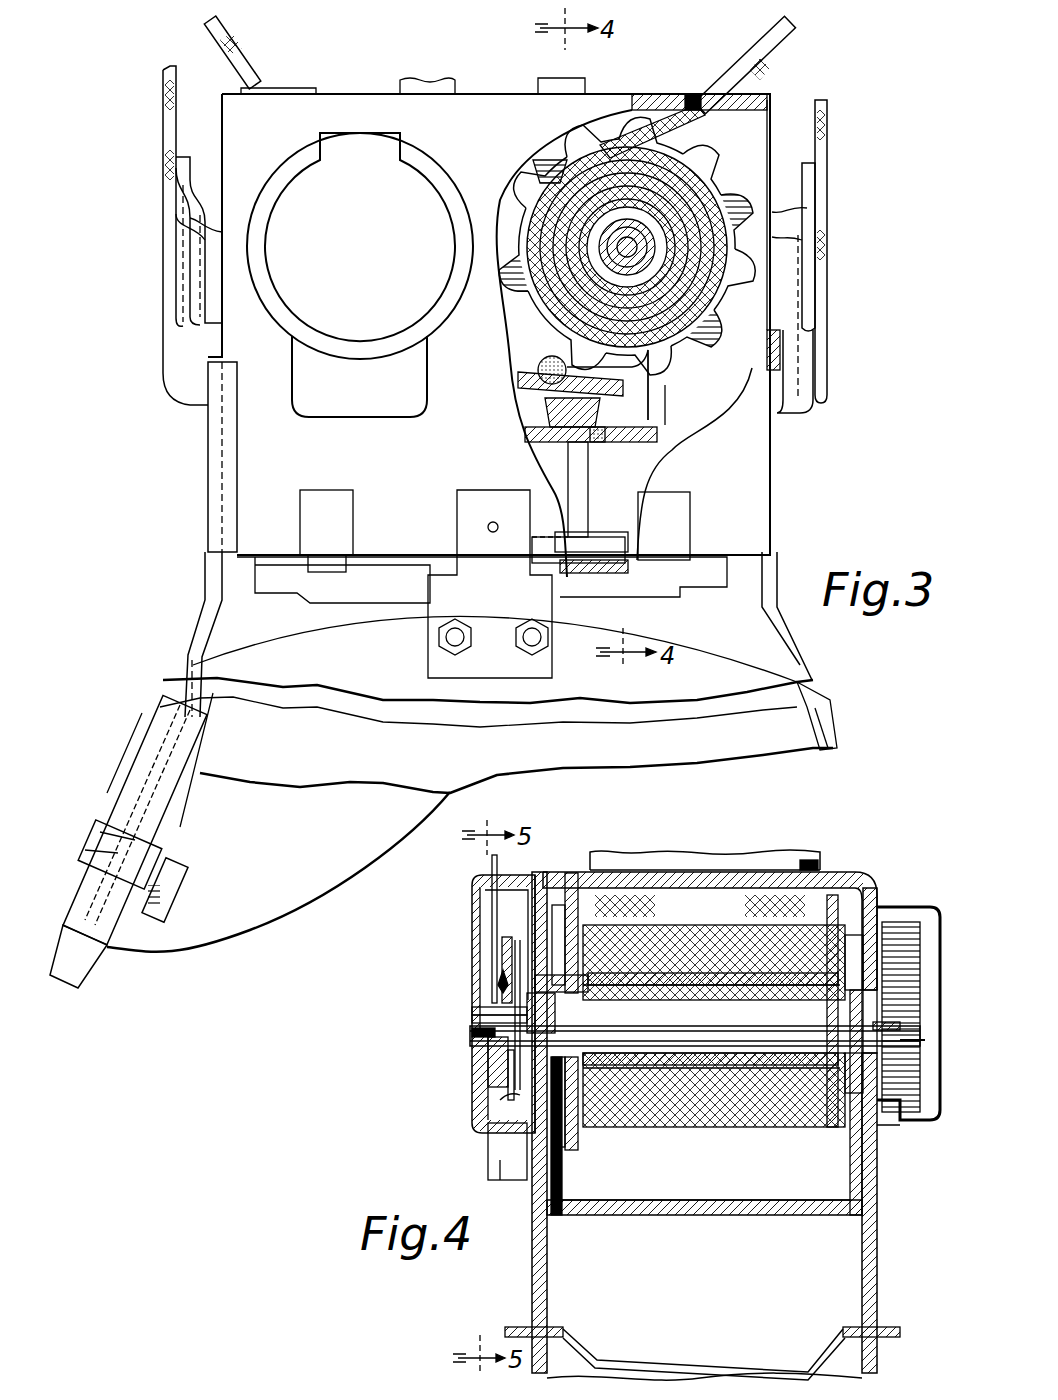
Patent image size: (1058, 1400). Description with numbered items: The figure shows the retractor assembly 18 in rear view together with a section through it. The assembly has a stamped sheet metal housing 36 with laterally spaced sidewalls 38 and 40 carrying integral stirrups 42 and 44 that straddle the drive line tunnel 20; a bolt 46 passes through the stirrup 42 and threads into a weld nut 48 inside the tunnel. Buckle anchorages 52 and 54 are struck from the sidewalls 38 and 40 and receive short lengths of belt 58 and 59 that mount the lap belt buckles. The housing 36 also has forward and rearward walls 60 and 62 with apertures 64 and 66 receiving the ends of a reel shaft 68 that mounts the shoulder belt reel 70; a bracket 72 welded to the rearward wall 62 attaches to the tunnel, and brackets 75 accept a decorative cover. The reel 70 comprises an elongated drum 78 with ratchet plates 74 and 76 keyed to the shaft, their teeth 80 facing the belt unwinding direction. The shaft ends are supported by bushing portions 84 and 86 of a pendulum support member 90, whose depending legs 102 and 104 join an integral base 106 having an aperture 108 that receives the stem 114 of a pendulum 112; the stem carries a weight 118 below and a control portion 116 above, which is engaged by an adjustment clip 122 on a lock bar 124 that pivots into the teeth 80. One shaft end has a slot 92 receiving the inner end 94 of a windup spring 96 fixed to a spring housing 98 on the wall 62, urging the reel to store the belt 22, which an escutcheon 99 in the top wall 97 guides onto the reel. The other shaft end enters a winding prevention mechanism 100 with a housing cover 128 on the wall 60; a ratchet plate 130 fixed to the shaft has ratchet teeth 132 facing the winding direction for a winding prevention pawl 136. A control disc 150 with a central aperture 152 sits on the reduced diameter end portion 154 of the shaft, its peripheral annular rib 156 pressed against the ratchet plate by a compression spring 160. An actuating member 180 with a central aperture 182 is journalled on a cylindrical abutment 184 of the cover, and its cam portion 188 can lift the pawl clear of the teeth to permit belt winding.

In FIG. 3, the retractor assembly 18 is at (352, 88).
In FIG. 4, the retractor assembly 18 is at (876, 850).
In FIG. 3, the drive line tunnel 20 is at (185, 780).
In FIG. 3, the belt 22 is at (757, 58).
In FIG. 4, the belt 22 is at (775, 862).
In FIG. 3, the housing 36 is at (735, 473).
In FIG. 3, the sidewall 38 is at (215, 445).
In FIG. 3, the sidewall 40 is at (778, 349).
In FIG. 3, the stirrup 42 is at (185, 652).
In FIG. 3, the stirrup 44 is at (790, 648).
In FIG. 3, the bolt 46 is at (105, 848).
In FIG. 3, the weld nut 48 is at (175, 845).
In FIG. 3, the buckle anchorage 52 is at (185, 273).
In FIG. 3, the buckle anchorage 54 is at (806, 210).
In FIG. 3, the belt 58 is at (165, 135).
In FIG. 3, the belt 59 is at (818, 158).
In FIG. 4, the forward wall 60 is at (540, 1265).
In FIG. 3, the rearward wall 62 is at (473, 127).
In FIG. 4, the rearward wall 62 is at (868, 1270).
In FIG. 4, the aperture 64 is at (560, 1045).
In FIG. 4, the aperture 66 is at (870, 1050).
In FIG. 3, the reel shaft 68 is at (560, 376).
In FIG. 4, the reel shaft 68 is at (750, 1005).
In FIG. 3, the shoulder belt reel 70 is at (545, 160).
In FIG. 4, the shoulder belt reel 70 is at (687, 922).
In FIG. 3, the bracket 72 is at (475, 545).
In FIG. 3, the ratchet plate 74 is at (673, 313).
In FIG. 4, the ratchet plate 74 is at (572, 905).
In FIG. 3, the brackets 75 is at (330, 507).
In FIG. 3, the ratchet plate 76 is at (532, 630).
In FIG. 4, the ratchet plate 76 is at (833, 918).
In FIG. 3, the drum 78 is at (685, 305).
In FIG. 4, the drum 78 is at (700, 985).
In FIG. 3, the teeth 80 is at (742, 180).
In FIG. 4, the bushing portion 84 is at (570, 993).
In FIG. 4, the bushing portion 86 is at (848, 1000).
In FIG. 3, the pendulum support member 90 is at (655, 388).
In FIG. 4, the pendulum support member 90 is at (660, 1192).
In FIG. 4, the slot 92 is at (898, 1025).
In FIG. 4, the inner end 94 is at (910, 1040).
In FIG. 4, the windup spring 96 is at (898, 930).
In FIG. 3, the top wall 97 is at (650, 98).
In FIG. 4, the top wall 97 is at (735, 880).
In FIG. 4, the spring housing 98 is at (920, 908).
In FIG. 3, the escutcheon 99 is at (697, 94).
In FIG. 4, the escutcheon 99 is at (830, 873).
In FIG. 4, the winding prevention mechanism 100 is at (466, 900).
In FIG. 3, the leg 102 is at (648, 410).
In FIG. 4, the leg 102 is at (562, 1180).
In FIG. 4, the leg 104 is at (855, 1160).
In FIG. 3, the base 106 is at (530, 440).
In FIG. 4, the base 106 is at (745, 1205).
In FIG. 3, the aperture 108 is at (598, 442).
In FIG. 3, the pendulum 112 is at (575, 548).
In FIG. 3, the stem 114 is at (580, 493).
In FIG. 3, the control portion 116 is at (540, 420).
In FIG. 3, the weight 118 is at (625, 548).
In FIG. 3, the adjustment clip 122 is at (545, 400).
In FIG. 3, the lock bar 124 is at (518, 375).
In FIG. 4, the housing cover 128 is at (492, 880).
In FIG. 4, the ratchet plate 130 is at (500, 895).
In FIG. 4, the ratchet teeth 132 is at (499, 1151).
In FIG. 4, the winding prevention pawl 136 is at (508, 1182).
In FIG. 4, the control disc 150 is at (500, 1078).
In FIG. 4, the central aperture 152 is at (547, 1013).
In FIG. 4, the reduced diameter end portion 154 is at (500, 1020).
In FIG. 4, the peripheral annular rib 156 is at (510, 1095).
In FIG. 4, the compression spring 160 is at (502, 990).
In FIG. 4, the actuating member 180 is at (480, 1062).
In FIG. 4, the central aperture 182 is at (500, 985).
In FIG. 4, the cylindrical abutment 184 is at (500, 1010).
In FIG. 4, the cam portion 188 is at (490, 1037).